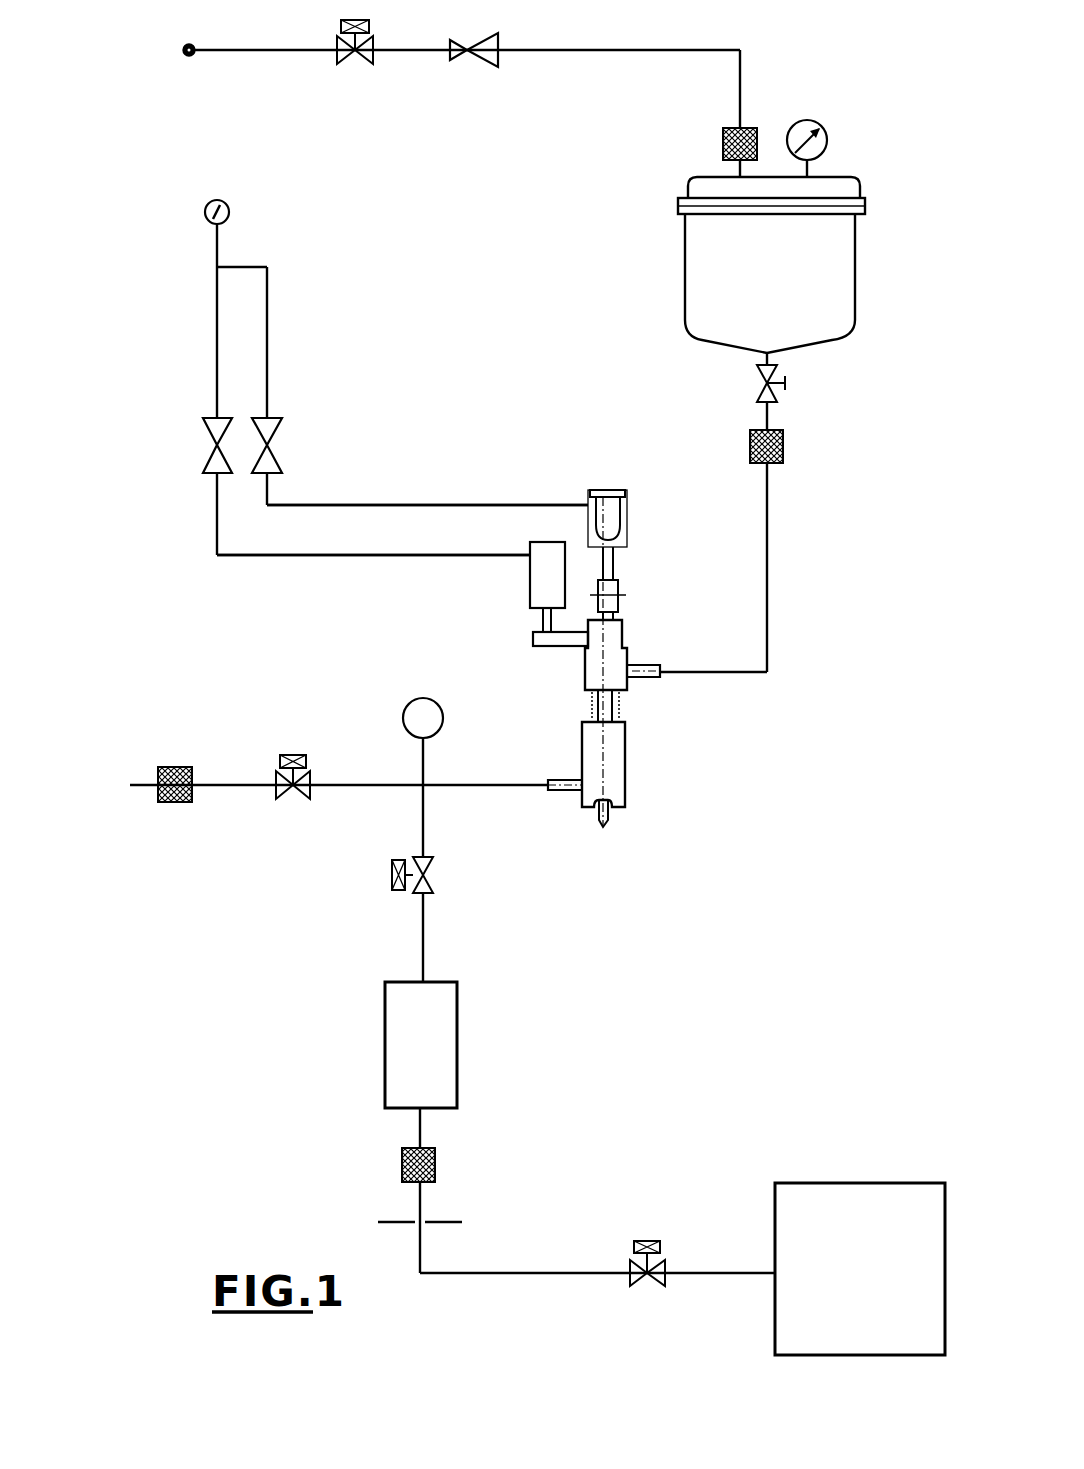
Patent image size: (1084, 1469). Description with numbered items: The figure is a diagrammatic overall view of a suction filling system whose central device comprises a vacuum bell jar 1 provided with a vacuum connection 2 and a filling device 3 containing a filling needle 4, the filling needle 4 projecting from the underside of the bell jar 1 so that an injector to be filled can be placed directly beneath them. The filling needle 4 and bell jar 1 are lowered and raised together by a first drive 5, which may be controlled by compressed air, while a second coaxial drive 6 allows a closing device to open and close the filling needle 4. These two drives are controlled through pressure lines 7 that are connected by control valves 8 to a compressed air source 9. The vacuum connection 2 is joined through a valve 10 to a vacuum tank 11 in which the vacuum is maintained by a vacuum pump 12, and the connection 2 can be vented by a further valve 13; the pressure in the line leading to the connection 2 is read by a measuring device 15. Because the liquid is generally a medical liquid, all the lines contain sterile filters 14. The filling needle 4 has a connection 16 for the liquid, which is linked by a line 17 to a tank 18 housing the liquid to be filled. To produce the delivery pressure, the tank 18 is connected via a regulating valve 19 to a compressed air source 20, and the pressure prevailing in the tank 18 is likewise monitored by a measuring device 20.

The vacuum bell jar 1 is at (618, 762).
The vacuum connection 2 is at (557, 795).
The filling device 3 is at (626, 645).
The filling needle 4 is at (609, 812).
The first drive 5 is at (559, 594).
The second coaxial drive 6 is at (615, 527).
The pressure lines 7 is at (437, 553).
The control valves 8 is at (267, 440).
The compressed air source 9 is at (203, 212).
The valve 10 is at (434, 875).
The vacuum tank 11 is at (445, 1038).
The vacuum pump 12 is at (858, 1196).
The further valve 13 is at (291, 753).
The sterile filters 14 is at (180, 765).
The measuring device 15 is at (425, 697).
The connection 16 is at (645, 680).
The line 17 is at (767, 518).
The tank 18 is at (843, 267).
The regulating valve 19 is at (490, 60).
The compressed air source / measuring device 20 is at (189, 58).